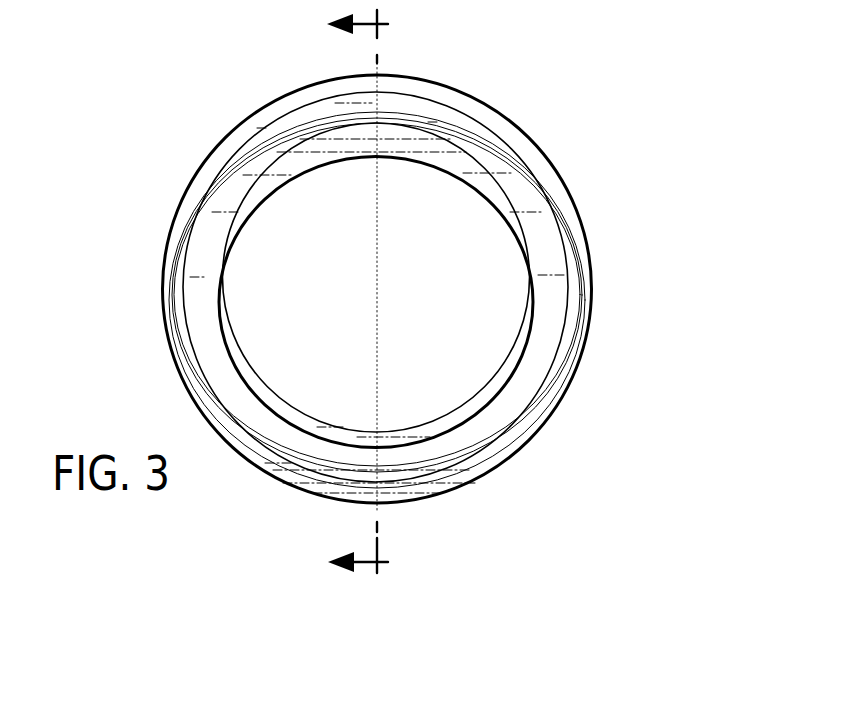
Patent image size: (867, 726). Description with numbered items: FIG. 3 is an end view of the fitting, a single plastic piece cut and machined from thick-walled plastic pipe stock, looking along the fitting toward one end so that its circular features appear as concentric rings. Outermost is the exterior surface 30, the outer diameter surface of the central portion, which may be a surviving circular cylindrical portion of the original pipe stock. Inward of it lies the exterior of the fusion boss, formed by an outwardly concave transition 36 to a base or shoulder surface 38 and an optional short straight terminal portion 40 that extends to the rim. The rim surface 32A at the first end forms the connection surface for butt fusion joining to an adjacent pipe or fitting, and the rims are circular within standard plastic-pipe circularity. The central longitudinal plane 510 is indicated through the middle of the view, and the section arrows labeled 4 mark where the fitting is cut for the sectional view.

The section line 4- 4 is at (371, 295).
The exterior surface 30 is at (492, 106).
The rim surface 32A is at (208, 258).
The outwardly concave transition 36 is at (323, 110).
The base or shoulder surface 38 is at (415, 85).
The terminal portion 40 is at (190, 348).
The central longitudinal plane 510 is at (377, 292).